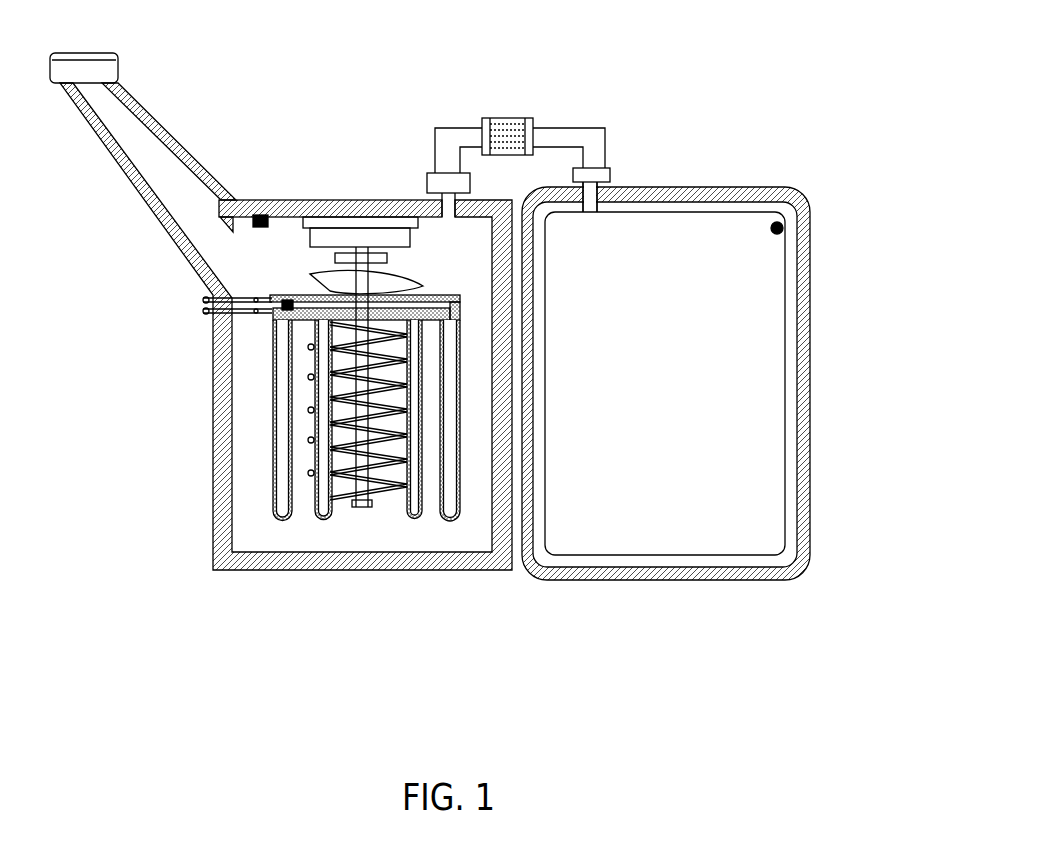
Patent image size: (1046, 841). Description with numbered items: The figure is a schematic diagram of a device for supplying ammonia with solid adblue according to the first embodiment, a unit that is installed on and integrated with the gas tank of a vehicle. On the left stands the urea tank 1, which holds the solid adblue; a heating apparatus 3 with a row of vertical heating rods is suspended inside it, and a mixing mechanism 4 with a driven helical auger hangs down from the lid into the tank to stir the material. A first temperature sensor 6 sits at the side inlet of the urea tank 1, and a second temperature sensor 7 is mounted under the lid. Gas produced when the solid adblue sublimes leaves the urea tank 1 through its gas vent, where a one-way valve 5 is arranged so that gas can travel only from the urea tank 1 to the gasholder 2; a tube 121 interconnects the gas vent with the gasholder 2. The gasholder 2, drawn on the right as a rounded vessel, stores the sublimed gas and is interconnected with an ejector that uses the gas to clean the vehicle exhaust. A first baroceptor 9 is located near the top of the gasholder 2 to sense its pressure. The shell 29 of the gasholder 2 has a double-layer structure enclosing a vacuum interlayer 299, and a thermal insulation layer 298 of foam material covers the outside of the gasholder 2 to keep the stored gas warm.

The urea tank 1 is at (262, 542).
The gasholder 2 is at (724, 435).
The heating apparatus 3 is at (308, 317).
The mixing mechanism 4 is at (368, 296).
The one-way valve 5 is at (498, 122).
The first temperature sensor 6 is at (272, 315).
The second temperature sensor 7 is at (252, 208).
The first baroceptor 9 is at (782, 224).
The shell of gasholder 29 is at (655, 580).
The tube 121 is at (563, 128).
The thermal insulation layer 298 is at (805, 398).
The vacuum interlayer 299 is at (793, 520).